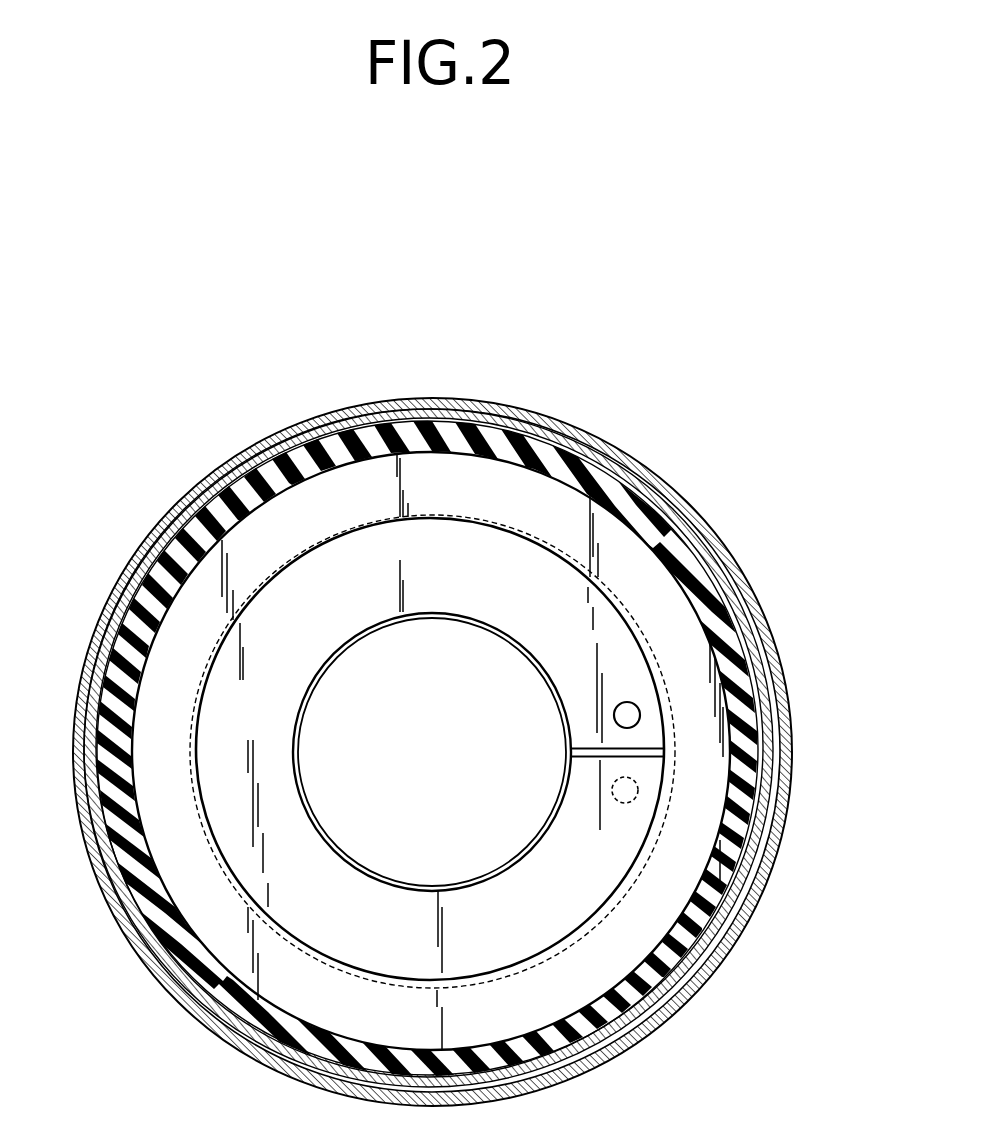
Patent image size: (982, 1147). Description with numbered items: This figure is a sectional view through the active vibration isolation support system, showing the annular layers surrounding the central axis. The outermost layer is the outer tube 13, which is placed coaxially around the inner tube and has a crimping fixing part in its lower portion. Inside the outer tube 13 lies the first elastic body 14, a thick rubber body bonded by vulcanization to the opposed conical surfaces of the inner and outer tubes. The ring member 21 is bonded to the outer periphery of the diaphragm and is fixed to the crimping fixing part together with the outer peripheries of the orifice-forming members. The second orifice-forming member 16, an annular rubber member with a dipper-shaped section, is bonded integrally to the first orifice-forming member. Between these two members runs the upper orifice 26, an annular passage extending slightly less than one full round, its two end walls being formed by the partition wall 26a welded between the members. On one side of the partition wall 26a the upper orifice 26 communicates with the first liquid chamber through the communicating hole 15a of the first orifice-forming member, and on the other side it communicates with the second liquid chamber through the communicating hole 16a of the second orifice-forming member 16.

The outer tube 13 is at (636, 462).
The first elastic body 14 is at (441, 447).
The ring member 21 is at (248, 458).
The upper orifice 26 is at (506, 595).
The partition wall 26a is at (584, 758).
The second orifice-forming member 16 is at (365, 643).
The communicating hole 16a is at (612, 713).
The communicating hole 15a is at (611, 802).